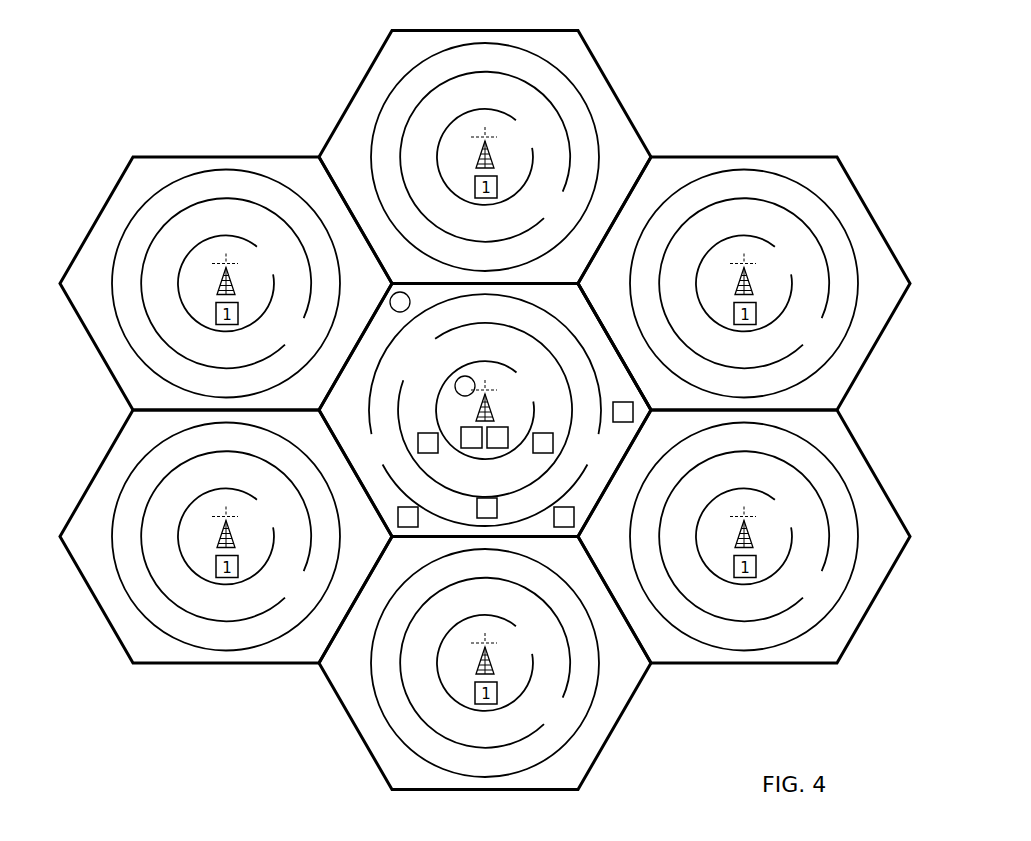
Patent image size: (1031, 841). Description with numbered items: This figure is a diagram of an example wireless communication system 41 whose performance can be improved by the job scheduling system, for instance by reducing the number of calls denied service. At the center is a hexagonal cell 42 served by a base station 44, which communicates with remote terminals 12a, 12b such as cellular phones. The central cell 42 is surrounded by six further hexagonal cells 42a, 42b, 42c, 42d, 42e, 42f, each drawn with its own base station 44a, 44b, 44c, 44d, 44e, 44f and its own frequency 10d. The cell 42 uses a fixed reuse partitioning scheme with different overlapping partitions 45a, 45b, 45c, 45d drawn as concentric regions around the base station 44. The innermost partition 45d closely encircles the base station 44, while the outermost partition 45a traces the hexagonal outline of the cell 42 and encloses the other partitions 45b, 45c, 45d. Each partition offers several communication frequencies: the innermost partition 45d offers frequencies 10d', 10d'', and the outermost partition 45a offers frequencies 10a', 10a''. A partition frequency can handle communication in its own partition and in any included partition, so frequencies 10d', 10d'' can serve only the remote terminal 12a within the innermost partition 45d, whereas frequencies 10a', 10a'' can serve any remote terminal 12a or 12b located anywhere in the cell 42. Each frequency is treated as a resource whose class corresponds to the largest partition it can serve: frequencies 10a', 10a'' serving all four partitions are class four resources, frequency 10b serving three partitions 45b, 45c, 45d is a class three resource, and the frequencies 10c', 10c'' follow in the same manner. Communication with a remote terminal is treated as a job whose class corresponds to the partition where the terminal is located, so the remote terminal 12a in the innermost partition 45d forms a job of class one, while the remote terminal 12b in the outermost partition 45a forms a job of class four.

The wireless communication system 41 is at (942, 154).
The hexagonal cell 42 is at (572, 278).
The neighboring cell 42a is at (613, 90).
The neighboring cell 42b is at (875, 347).
The neighboring cell 42c is at (875, 600).
The neighboring cell 42d is at (615, 728).
The neighboring cell 42e is at (228, 665).
The neighboring cell 42f is at (95, 348).
The base station 44 is at (498, 408).
The base station 44a is at (495, 159).
The base station 44b is at (754, 286).
The base station 44c is at (754, 538).
The base station 44d is at (495, 665).
The base station 44e is at (236, 538).
The base station 44f is at (236, 286).
The outermost partition 45a is at (598, 313).
The cell partition 45b is at (577, 312).
The cell partition 45c is at (453, 326).
The innermost partition 45d is at (472, 362).
The remote terminal 12a is at (455, 388).
The remote terminal 12b is at (395, 312).
The frequency 10a' is at (383, 502).
The frequency 10a'' is at (594, 502).
The frequency 10b is at (497, 508).
The partition frequency 10c' is at (399, 447).
The partition frequency 10c'' is at (576, 447).
The mobile station (class 1) 10d is at (521, 451).
The frequency 10d' is at (453, 457).
The frequency 10d'' is at (521, 457).